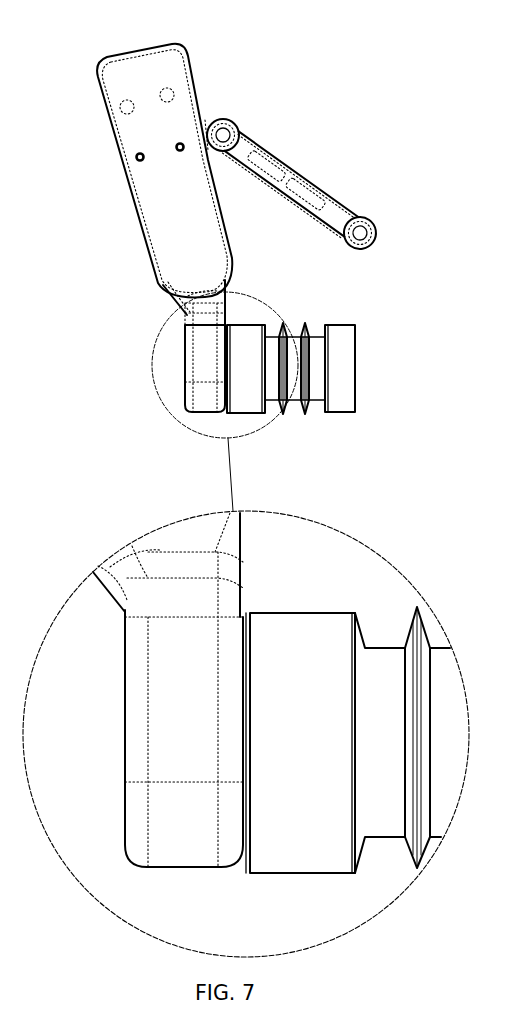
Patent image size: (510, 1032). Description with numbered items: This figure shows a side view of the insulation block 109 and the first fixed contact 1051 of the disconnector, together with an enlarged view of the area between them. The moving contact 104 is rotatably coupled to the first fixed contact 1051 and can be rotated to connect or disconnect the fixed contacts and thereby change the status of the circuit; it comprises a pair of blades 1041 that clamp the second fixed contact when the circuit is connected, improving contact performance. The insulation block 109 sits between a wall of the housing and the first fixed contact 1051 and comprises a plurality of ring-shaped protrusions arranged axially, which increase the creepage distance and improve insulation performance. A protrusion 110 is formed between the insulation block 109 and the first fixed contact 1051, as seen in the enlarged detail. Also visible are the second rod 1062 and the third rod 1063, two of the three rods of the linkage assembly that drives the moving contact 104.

The moving contact 104 is at (156, 169).
The blades 1041 is at (142, 181).
The first fixed contact 1051 is at (200, 360).
The second rod 1062 is at (293, 166).
The third rod 1063 is at (203, 122).
The insulation block 109 is at (337, 355).
The protrusion 110 is at (245, 682).